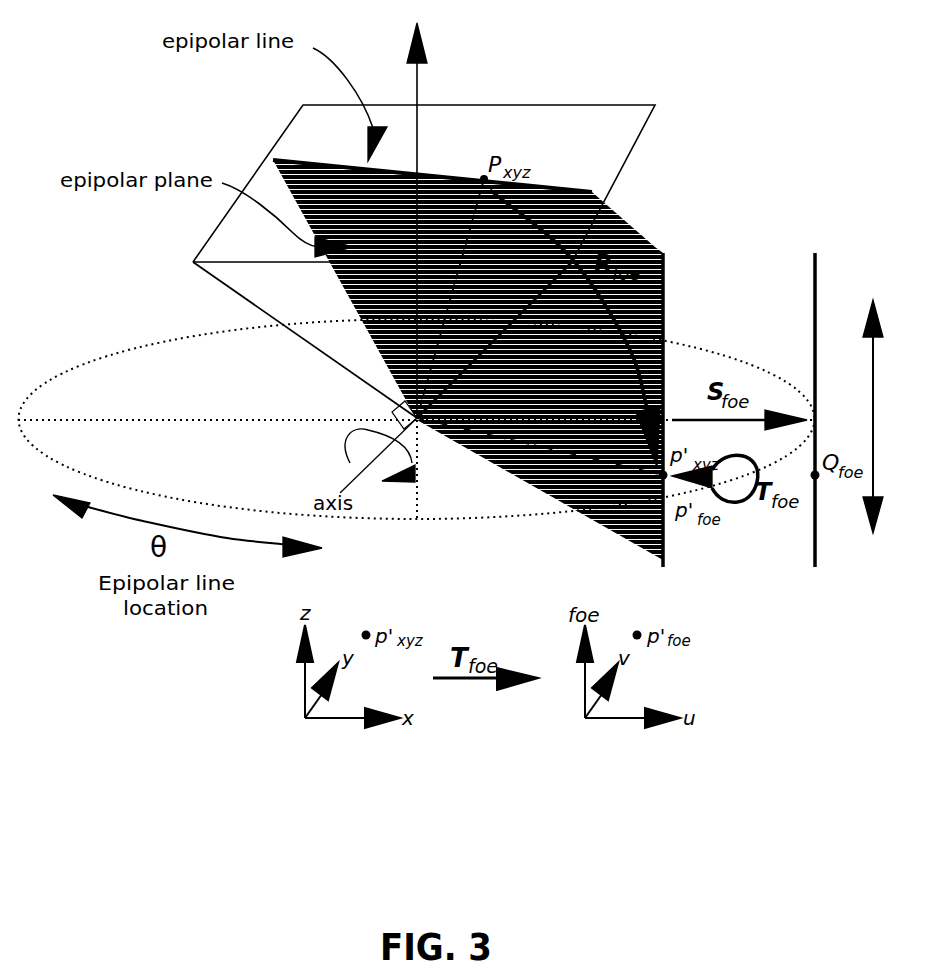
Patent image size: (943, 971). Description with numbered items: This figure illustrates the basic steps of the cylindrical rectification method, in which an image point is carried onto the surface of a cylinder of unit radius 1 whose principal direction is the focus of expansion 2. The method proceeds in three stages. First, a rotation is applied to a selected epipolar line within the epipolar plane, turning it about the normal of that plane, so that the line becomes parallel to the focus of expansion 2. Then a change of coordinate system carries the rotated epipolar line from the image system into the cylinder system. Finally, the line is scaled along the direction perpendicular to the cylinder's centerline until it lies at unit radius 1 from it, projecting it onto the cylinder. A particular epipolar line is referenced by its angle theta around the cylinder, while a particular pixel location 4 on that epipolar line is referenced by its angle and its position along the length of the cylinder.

The unit radius of the viewing sphere 1 is at (416, 409).
The FOE axis (focus of expansion) 2 is at (442, 220).
The pixel location range on image plane 4 is at (882, 416).